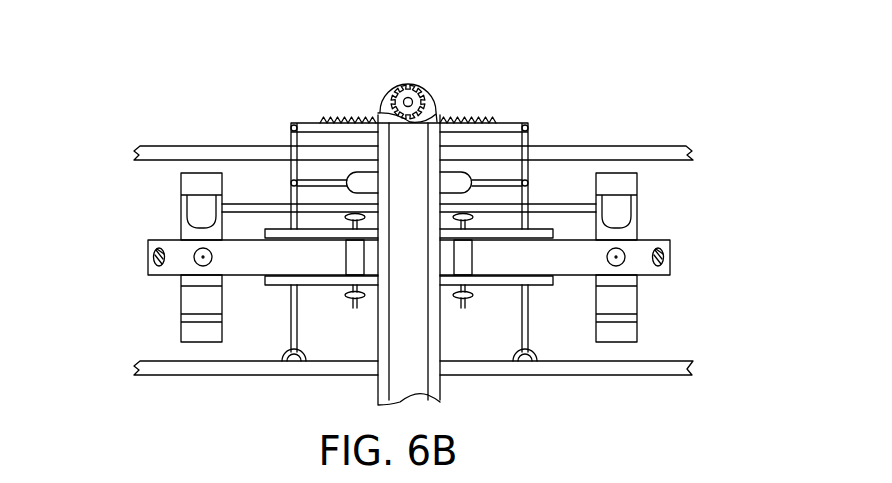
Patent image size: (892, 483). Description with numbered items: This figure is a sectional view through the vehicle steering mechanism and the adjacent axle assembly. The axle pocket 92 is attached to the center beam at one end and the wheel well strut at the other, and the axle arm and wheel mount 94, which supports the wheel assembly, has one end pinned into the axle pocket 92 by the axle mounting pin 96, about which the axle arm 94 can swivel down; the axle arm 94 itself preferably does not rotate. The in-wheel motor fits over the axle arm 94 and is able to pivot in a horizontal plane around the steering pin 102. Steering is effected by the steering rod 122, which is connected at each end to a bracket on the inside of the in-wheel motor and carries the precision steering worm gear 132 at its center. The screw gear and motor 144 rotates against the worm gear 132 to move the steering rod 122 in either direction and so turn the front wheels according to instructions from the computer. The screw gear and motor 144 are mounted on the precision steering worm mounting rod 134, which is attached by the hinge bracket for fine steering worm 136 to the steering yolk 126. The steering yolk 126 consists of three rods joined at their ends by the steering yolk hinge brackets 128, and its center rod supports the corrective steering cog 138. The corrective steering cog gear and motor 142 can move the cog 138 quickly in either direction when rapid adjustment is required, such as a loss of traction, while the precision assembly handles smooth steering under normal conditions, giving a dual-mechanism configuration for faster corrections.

The axle pocket 92 is at (307, 287).
The axle arm and wheel mount 94 is at (257, 278).
The axle mounting pin 96 is at (355, 301).
The steering pin 102 is at (197, 257).
The steering rod 122 is at (216, 158).
The steering yolk 126 is at (300, 333).
The steering yolk hinge brackets 128 is at (272, 359).
The precision steering worm gear 132 is at (363, 180).
The precision steering worm mounting rod 134 is at (300, 156).
The hinge bracket for fine steering worm 136 is at (290, 184).
The corrective steering cog 138 is at (323, 116).
The corrective steering cog gear and motor 142 is at (406, 77).
The screw gear and motor 144 is at (448, 176).